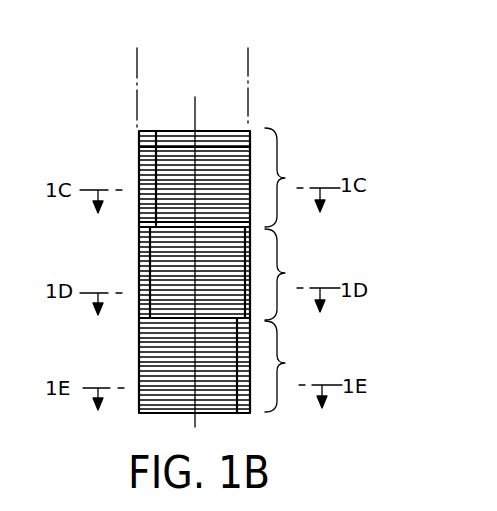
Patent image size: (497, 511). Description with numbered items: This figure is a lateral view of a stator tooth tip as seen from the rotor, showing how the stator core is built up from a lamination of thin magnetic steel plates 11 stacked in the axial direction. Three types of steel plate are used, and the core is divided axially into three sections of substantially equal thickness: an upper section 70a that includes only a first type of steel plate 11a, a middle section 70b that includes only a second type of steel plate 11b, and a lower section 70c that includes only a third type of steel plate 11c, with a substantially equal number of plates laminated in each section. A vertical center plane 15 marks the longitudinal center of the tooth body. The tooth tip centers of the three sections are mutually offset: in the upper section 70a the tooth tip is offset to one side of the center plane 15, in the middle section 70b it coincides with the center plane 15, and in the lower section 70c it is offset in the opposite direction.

The magnetic steel plates 11 is at (139, 139).
The first type of steel plate 11a is at (139, 167).
The second type of steel plate 11b is at (140, 254).
The third type of steel plate 11c is at (160, 362).
The center plane 15 is at (195, 110).
The upper section 70a is at (298, 177).
The middle section 70b is at (298, 274).
The lower section 70c is at (299, 366).